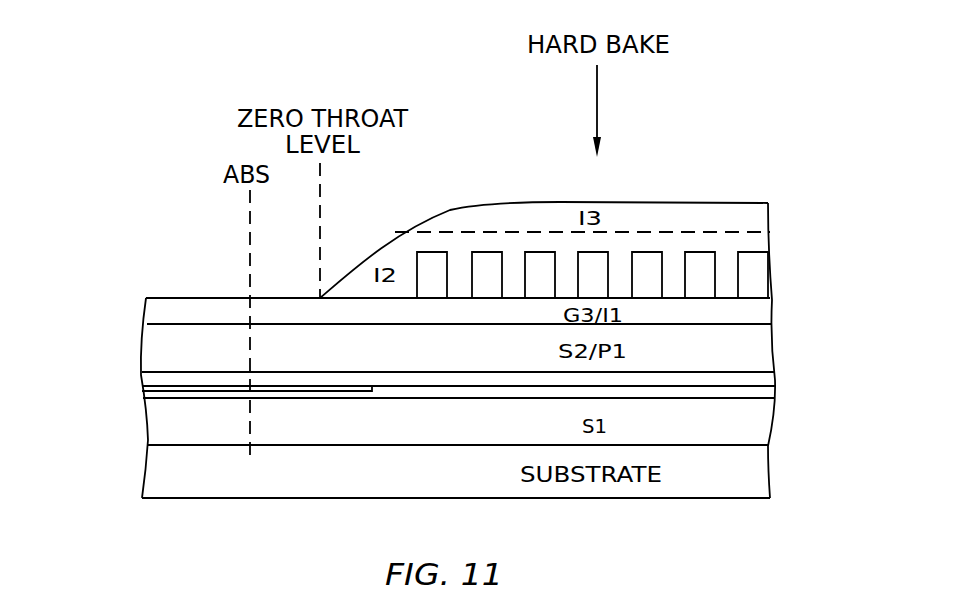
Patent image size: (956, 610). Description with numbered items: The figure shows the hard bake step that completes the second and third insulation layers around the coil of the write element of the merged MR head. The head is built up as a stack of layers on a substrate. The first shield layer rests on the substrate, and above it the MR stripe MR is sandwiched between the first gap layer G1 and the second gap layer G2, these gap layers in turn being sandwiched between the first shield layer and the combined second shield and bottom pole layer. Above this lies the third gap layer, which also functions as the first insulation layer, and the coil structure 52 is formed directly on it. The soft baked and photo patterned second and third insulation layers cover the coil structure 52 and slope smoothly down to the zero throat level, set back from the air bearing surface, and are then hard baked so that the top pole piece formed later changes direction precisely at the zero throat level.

The coil structure 52 is at (645, 250).
The MR stripe MR is at (156, 380).
The second gap layer G2 is at (790, 377).
The first gap layer G1 is at (790, 398).